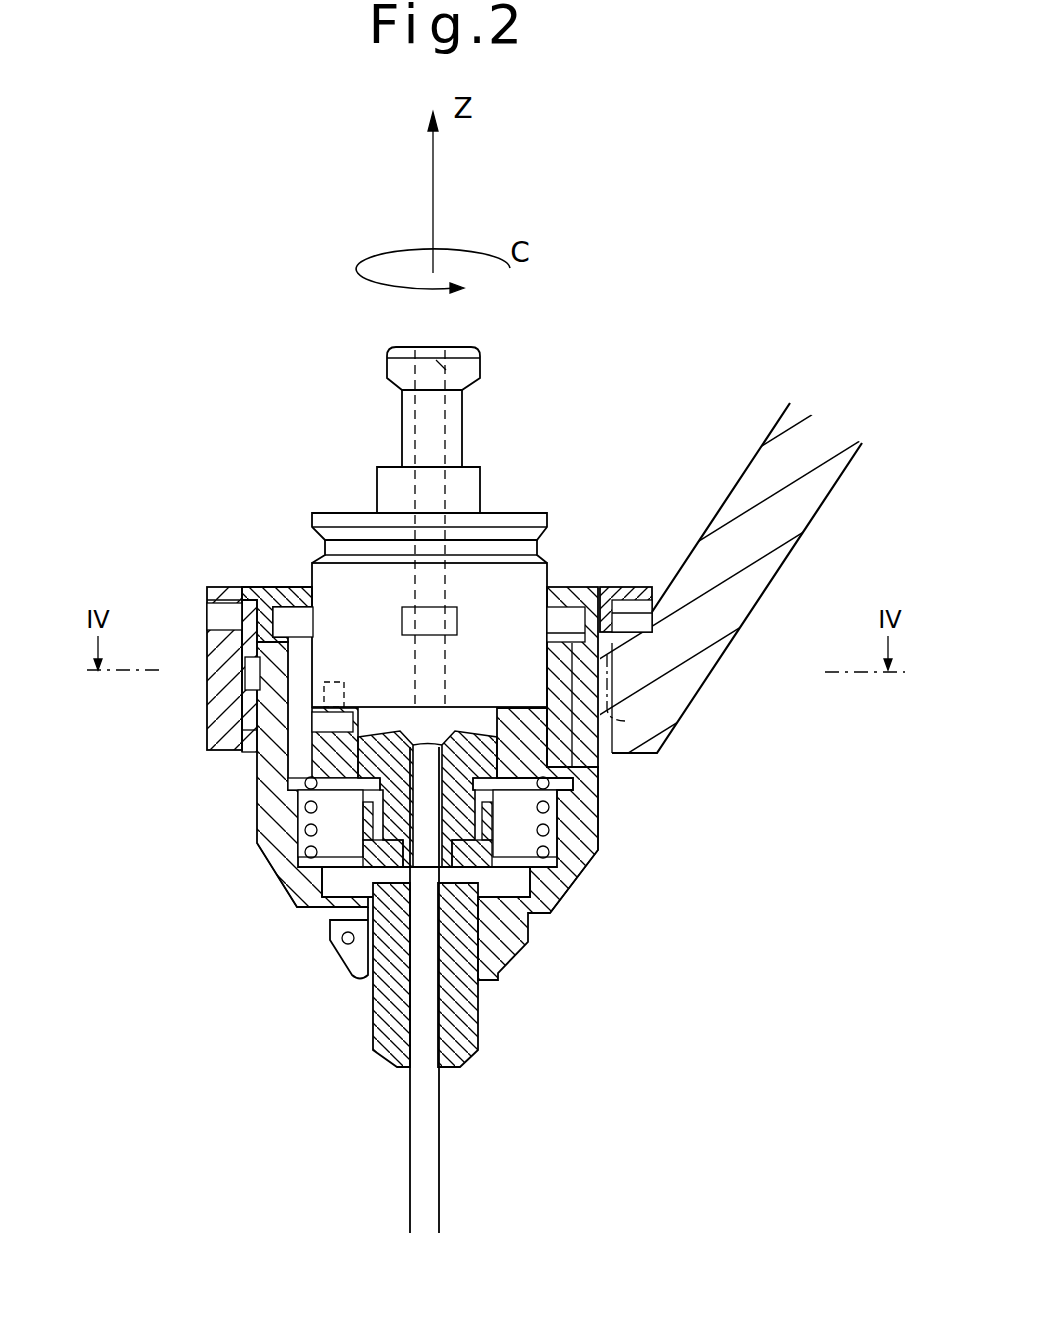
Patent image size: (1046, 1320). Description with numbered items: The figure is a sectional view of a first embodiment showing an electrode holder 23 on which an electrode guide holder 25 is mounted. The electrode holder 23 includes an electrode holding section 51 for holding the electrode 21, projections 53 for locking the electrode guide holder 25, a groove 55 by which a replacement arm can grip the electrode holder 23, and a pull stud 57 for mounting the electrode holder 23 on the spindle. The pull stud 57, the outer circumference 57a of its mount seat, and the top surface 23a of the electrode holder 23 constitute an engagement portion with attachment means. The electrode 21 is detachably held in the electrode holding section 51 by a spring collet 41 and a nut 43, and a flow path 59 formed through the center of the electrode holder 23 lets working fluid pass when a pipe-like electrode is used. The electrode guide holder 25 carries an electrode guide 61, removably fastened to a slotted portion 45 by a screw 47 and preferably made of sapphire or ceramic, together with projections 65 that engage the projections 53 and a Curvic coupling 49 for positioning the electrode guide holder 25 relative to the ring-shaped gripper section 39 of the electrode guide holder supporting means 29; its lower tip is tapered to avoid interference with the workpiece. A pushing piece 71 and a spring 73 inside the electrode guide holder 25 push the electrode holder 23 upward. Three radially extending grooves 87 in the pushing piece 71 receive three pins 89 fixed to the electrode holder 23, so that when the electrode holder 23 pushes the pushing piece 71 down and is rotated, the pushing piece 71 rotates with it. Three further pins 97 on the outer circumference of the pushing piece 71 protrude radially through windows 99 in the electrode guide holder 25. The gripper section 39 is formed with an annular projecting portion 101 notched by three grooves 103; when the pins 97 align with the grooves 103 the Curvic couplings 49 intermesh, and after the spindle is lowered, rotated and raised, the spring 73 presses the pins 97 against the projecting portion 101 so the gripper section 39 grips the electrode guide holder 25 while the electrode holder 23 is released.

The electrode 21 is at (425, 1160).
The electrode holder 23 is at (507, 595).
The top surface of the electrode holder 23a is at (513, 513).
The electrode guide holder 25 is at (580, 822).
The electrode guide holder supporting means 29 is at (807, 507).
The gripper section 39 is at (220, 654).
The spring collet 41 is at (548, 907).
The nut 43 is at (285, 905).
The slotted portion 45 is at (360, 968).
The screw 47 is at (346, 942).
The Curvic coupling 49 is at (205, 620).
The electrode holding section 51 is at (558, 852).
The projections 53 is at (565, 622).
The groove 55 is at (325, 540).
The pull stud 57 is at (462, 405).
The outer circumference of the mount seat of the pull stud 57a is at (480, 478).
The flow path 59 is at (442, 345).
The electrode guide 61 is at (465, 1013).
The projections 65 is at (295, 592).
The pushing piece 71 is at (598, 795).
The spring 73 is at (305, 835).
The radially extending grooves 87 is at (305, 773).
The pins 89 is at (312, 727).
The pins 97 is at (235, 690).
The windows 99 is at (256, 698).
The annular projecting portion 101 is at (606, 642).
The grooves 103 is at (245, 585).